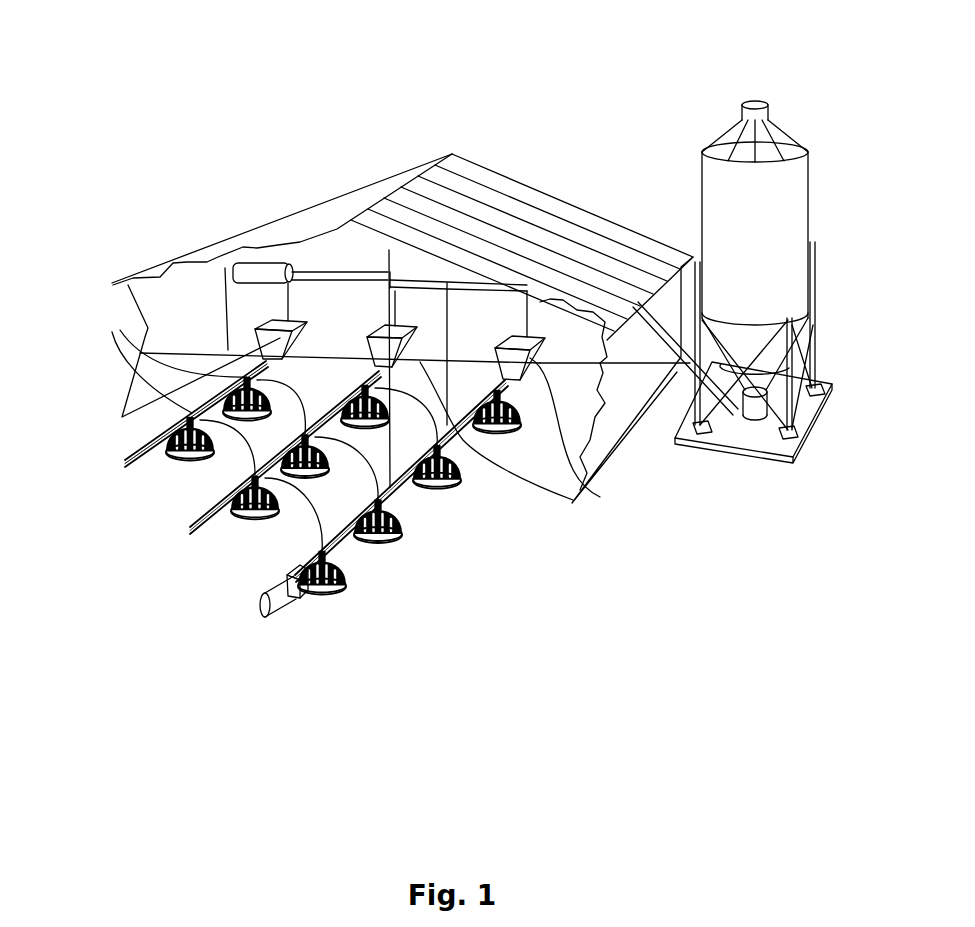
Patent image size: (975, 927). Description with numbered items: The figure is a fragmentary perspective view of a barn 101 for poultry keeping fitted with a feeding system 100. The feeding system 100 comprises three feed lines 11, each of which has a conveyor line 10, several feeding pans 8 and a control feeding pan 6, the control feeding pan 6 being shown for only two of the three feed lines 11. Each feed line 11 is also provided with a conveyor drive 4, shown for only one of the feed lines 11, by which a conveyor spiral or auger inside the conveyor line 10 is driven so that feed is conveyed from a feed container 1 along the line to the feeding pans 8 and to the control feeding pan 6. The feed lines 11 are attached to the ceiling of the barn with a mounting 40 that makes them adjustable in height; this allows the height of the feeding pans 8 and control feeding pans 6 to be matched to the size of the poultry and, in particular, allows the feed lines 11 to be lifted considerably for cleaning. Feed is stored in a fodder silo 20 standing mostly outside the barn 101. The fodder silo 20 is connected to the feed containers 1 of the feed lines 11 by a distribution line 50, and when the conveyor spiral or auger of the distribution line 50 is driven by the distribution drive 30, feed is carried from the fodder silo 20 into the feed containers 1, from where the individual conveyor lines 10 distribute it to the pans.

The feeding system 100 is at (455, 712).
The barn 101 is at (529, 166).
The fodder silo 20 is at (824, 157).
The distribution drive 30 is at (262, 265).
The distribution line 50 is at (350, 272).
The mounting 40 is at (452, 304).
The conveyor line 10 is at (170, 359).
The feeding pans 8 is at (182, 420).
The control feeding pan 6 is at (332, 553).
The conveyor drive 4 is at (286, 598).
The feed line 11 is at (124, 467).
The feed container 1 is at (233, 330).